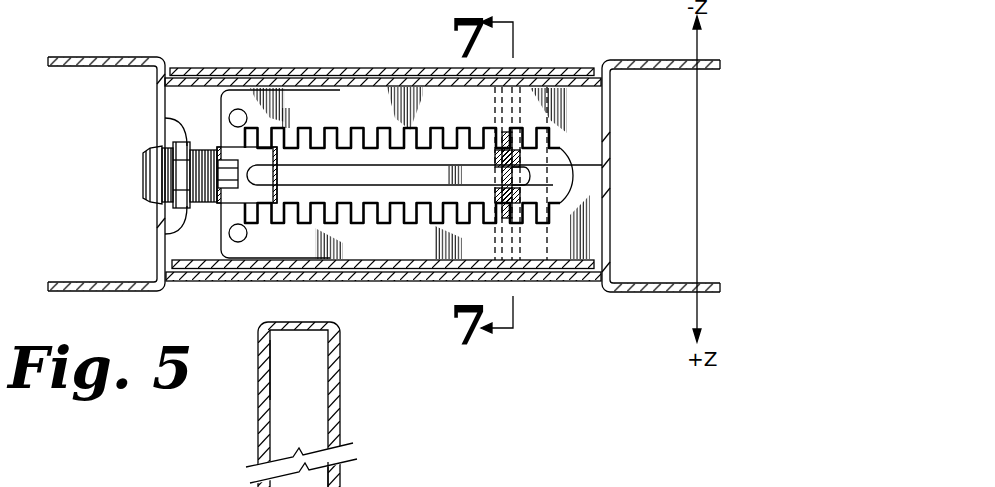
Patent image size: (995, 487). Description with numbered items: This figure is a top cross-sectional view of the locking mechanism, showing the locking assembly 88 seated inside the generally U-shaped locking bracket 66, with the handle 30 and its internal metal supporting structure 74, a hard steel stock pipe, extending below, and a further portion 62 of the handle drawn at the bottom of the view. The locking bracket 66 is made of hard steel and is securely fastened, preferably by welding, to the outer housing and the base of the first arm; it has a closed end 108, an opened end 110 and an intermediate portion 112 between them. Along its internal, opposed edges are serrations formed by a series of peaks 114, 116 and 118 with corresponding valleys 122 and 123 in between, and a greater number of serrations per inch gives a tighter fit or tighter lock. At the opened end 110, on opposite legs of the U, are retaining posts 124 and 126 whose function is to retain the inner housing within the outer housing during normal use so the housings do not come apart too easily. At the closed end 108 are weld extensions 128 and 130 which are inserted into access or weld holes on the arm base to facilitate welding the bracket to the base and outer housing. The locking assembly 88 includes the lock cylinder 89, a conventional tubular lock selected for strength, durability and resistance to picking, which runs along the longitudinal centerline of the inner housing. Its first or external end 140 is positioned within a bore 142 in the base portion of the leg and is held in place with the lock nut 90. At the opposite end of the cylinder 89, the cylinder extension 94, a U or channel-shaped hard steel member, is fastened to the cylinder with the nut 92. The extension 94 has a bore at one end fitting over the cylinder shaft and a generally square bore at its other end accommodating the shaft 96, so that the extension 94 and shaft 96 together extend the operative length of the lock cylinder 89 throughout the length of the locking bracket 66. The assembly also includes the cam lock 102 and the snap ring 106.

The handle 30 is at (360, 402).
The lower tube portion 62 is at (368, 474).
The locking bracket 66 is at (243, 94).
The metal supporting structure 74 is at (328, 402).
The locking assembly 88 is at (546, 39).
The cylinder 89 is at (168, 219).
The lock nut 90 is at (164, 123).
The nut 92 is at (220, 150).
The cylinder extension 94 is at (245, 194).
The shaft 96 is at (318, 170).
The cam lock 102 is at (508, 222).
The snap ring 106 is at (607, 166).
The closed end 108 is at (583, 125).
The opened end 110 is at (230, 253).
The intermediate portion 112 is at (428, 102).
The peak 114 is at (357, 221).
The peak 116 is at (380, 216).
The peak 118 is at (403, 220).
The valley 122 is at (392, 210).
The valley 123 is at (368, 203).
The retaining post 124 is at (236, 111).
The retaining post 126 is at (240, 240).
The weld extension 128 is at (606, 116).
The weld extension 130 is at (606, 241).
The external end 140 is at (152, 160).
The bore 142 is at (138, 107).